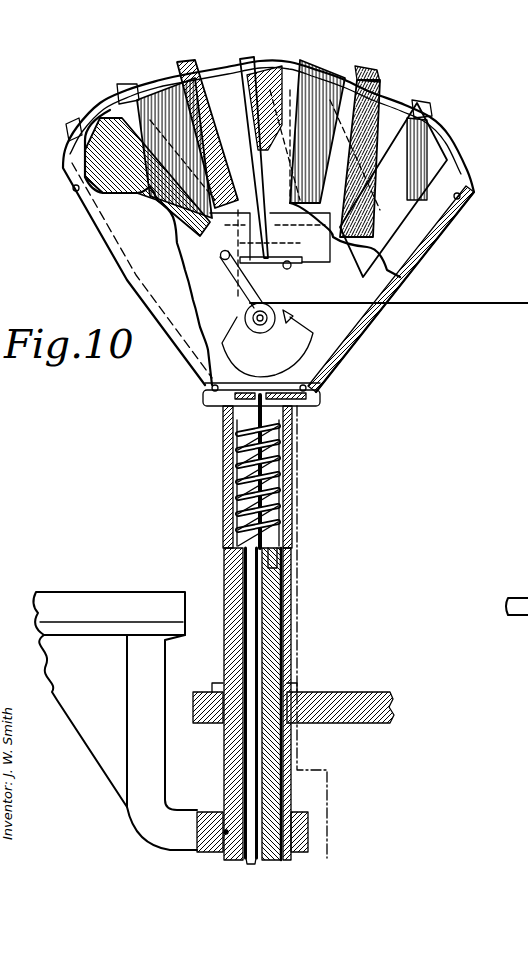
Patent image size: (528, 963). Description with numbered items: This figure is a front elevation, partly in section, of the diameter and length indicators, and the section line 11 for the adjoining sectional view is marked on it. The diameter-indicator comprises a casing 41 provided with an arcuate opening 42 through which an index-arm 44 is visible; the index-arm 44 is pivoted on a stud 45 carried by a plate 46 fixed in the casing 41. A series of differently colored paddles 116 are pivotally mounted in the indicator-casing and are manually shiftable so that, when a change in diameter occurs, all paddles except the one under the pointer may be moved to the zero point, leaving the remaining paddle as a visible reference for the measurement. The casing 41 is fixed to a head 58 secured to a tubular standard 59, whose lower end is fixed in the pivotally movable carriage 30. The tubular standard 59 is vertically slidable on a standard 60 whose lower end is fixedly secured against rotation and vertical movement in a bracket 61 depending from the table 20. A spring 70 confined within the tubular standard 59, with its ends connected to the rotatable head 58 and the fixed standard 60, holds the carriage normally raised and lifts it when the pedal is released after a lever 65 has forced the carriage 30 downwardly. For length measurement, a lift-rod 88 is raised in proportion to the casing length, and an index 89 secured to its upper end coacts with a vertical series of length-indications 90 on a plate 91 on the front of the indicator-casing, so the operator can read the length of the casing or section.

The differently colored paddles 116 is at (383, 120).
The indicator-casing 41 is at (460, 151).
The length-indications 90 is at (215, 226).
The index 89 is at (225, 247).
The plate 91 is at (350, 243).
The stud 45 is at (292, 314).
The plate 46 is at (300, 377).
The head 58 is at (300, 417).
The spring 70 is at (293, 442).
The lift-rod 88 is at (258, 583).
The tubular standard 59 is at (290, 605).
The standard 60 is at (271, 655).
The carriage 30 is at (368, 723).
The bracket 61 is at (302, 827).
The base line 11 is at (307, 857).
The table 20 is at (128, 584).
The index-arm 44 is at (247, 300).
The lever 65 is at (527, 672).
The arcuate opening 42 is at (389, 294).